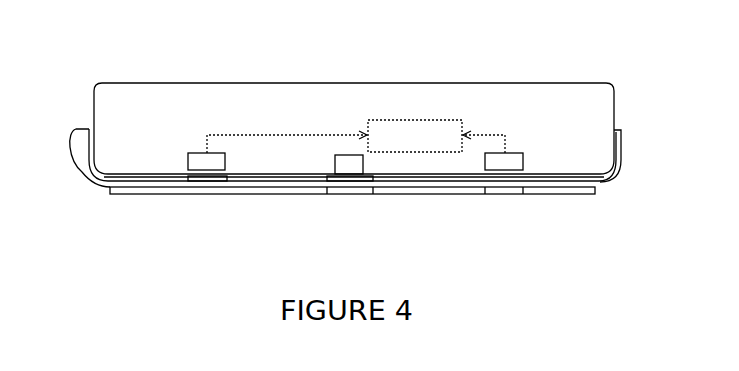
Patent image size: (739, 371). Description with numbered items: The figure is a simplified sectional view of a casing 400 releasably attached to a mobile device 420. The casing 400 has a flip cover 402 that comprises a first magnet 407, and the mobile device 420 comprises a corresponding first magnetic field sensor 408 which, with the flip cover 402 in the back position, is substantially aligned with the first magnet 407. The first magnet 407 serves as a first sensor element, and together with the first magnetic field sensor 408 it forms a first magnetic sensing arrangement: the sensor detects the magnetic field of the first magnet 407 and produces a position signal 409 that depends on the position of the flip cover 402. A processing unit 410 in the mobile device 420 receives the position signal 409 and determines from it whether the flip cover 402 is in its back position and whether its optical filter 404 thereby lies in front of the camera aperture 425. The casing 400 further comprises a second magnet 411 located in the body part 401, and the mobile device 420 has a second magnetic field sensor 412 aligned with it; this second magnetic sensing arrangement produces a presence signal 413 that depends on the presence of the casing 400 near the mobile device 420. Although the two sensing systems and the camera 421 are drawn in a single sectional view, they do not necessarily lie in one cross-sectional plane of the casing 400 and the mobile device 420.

The casing 400 is at (103, 212).
The body part 401 is at (95, 192).
The flip cover 402 is at (562, 195).
The optical filter 404 is at (337, 195).
The first magnet 407 is at (517, 195).
The first magnetic field sensor 408 is at (515, 158).
The position signal 409 is at (516, 100).
The processing unit 410 is at (395, 120).
The second magnet 411 is at (197, 183).
The second magnetic field sensor 412 is at (197, 160).
The presence signal 413 is at (268, 105).
The mobile device 420 is at (134, 105).
The camera 421 is at (348, 165).
The camera aperture 425 is at (355, 176).